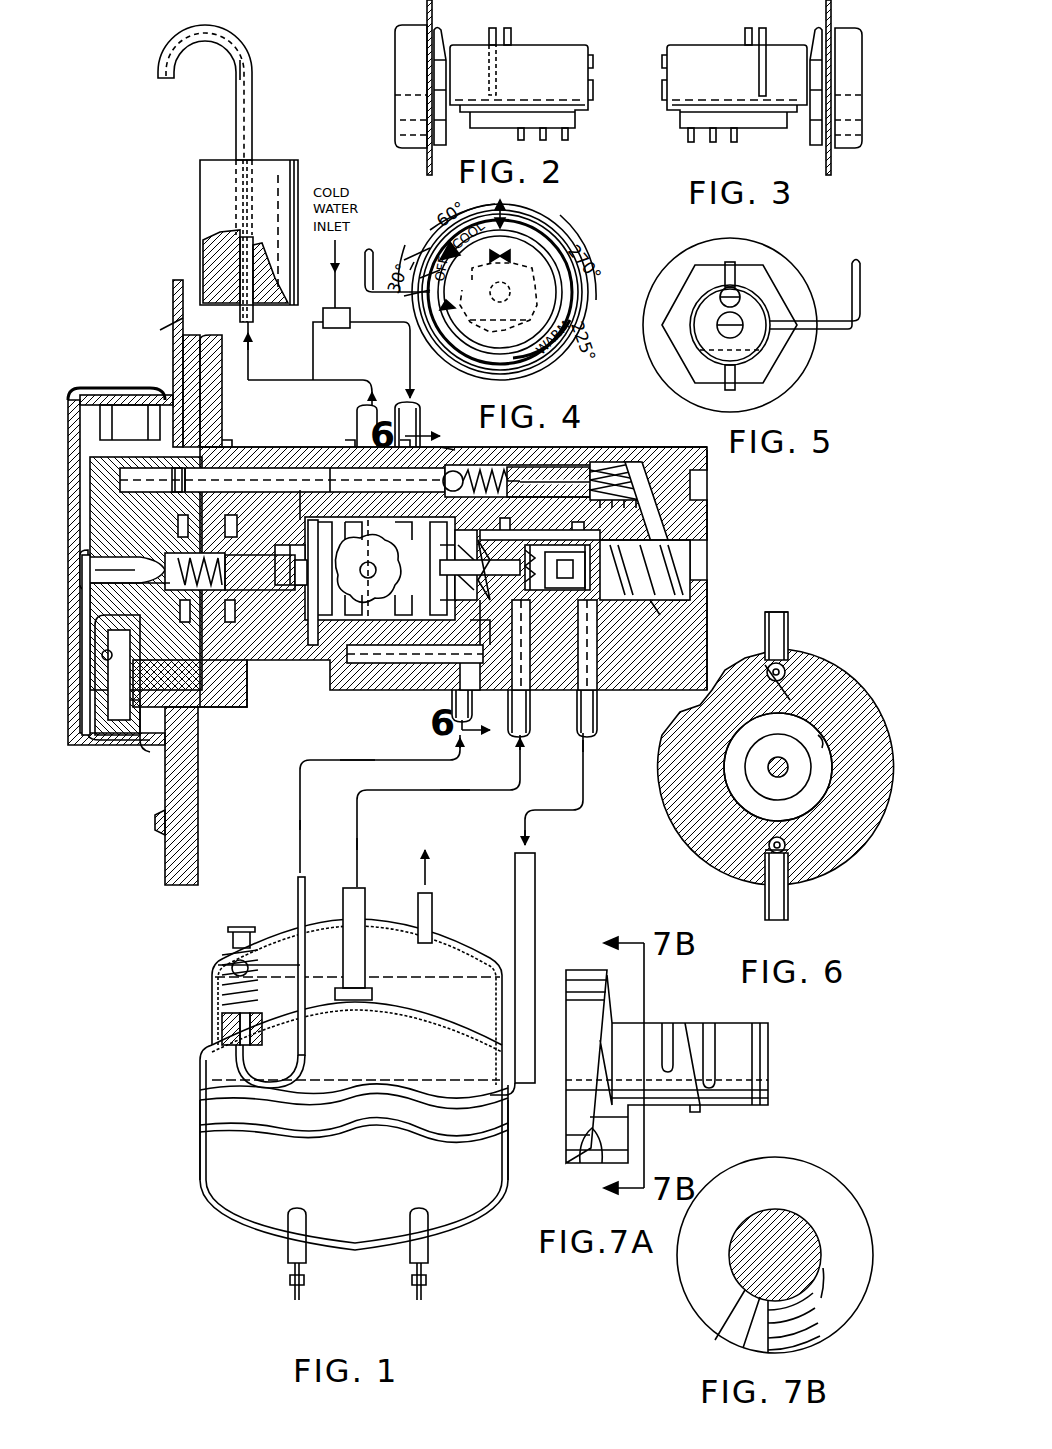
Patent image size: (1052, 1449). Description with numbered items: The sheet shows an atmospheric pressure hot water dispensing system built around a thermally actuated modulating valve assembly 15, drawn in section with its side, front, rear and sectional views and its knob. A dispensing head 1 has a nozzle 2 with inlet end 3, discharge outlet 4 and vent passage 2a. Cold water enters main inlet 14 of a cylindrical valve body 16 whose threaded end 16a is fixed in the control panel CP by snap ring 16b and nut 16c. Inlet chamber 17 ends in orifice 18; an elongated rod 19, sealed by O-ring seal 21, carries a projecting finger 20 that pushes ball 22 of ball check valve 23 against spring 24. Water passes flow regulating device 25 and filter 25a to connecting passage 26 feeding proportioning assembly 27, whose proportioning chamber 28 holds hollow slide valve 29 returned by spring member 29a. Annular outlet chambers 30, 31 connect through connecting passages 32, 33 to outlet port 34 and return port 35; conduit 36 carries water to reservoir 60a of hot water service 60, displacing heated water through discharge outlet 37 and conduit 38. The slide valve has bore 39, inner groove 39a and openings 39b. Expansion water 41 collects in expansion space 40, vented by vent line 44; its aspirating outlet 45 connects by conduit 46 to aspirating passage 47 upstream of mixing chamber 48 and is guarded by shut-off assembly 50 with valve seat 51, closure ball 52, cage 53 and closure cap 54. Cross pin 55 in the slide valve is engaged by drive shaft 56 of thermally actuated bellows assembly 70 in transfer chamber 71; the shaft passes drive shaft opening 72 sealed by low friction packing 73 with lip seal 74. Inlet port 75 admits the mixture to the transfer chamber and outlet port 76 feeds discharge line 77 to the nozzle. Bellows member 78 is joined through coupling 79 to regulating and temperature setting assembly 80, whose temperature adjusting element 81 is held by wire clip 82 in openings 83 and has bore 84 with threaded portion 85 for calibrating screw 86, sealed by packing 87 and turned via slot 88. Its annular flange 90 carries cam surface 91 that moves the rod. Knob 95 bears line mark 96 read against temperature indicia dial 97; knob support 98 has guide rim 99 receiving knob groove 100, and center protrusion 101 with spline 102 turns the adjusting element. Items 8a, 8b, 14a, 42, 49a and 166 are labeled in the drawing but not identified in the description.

In FIG. 1, the dispensing head 1 is at (218, 198).
In FIG. 1, the dispensing nozzle 2 is at (236, 100).
In FIG. 1, the vent passage 2a is at (252, 62).
In FIG. 1, the inlet end 3 is at (240, 310).
In FIG. 1, the discharge outlet 4 is at (165, 60).
In FIG. 1, the control panel CP is at (172, 292).
In FIG. 2, the tube 8a is at (511, 30).
In FIG. 5, the tube 8a is at (725, 270).
In FIG. 6, the tube 8a is at (788, 620).
In FIG. 3, the tube 8b is at (745, 30).
In FIG. 6, the main inlet 14 is at (789, 638).
In FIG. 1, the cold water inlet pipe 14a is at (423, 418).
In FIG. 1, the thermally actuated modulating valve assembly 15 is at (298, 445).
In FIG. 2, the thermally actuated modulating valve assembly 15 is at (555, 42).
In FIG. 3, the thermally actuated modulating valve assembly 15 is at (695, 44).
In FIG. 5, the thermally actuated modulating valve assembly 15 is at (772, 348).
In FIG. 1, the cylindrical valve body 16 is at (300, 447).
In FIG. 1, the threaded end 16a is at (135, 405).
In FIG. 1, the snap ring 16b is at (178, 360).
In FIG. 1, the nut 16c is at (218, 395).
In FIG. 2, the nut 16c is at (447, 45).
In FIG. 3, the nut 16c is at (812, 40).
In FIG. 1, the inlet chamber 17 is at (350, 447).
In FIG. 6, the inlet chamber 17 is at (768, 672).
In FIG. 1, the outlet orifice 18 is at (450, 450).
In FIG. 6, the outlet orifice 18 is at (786, 672).
In FIG. 1, the elongated rod 19 is at (201, 465).
In FIG. 6, the elongated rod 19 is at (778, 767).
In FIG. 1, the projecting finger 20 is at (370, 493).
In FIG. 6, the projecting finger 20 is at (778, 755).
In FIG. 1, the O-ring seal 21 is at (178, 468).
In FIG. 1, the ball 22 is at (455, 492).
In FIG. 1, the ball check valve 23 is at (492, 498).
In FIG. 1, the spring 24 is at (470, 557).
In FIG. 1, the flow regulating device 25 is at (585, 447).
In FIG. 1, the filter 25a is at (622, 462).
In FIG. 1, the connecting passage 26 is at (708, 516).
In FIG. 1, the proportioning assembly 27 is at (548, 490).
In FIG. 1, the proportioning chamber 28 is at (495, 622).
In FIG. 1, the hollow cylindrical slide valve 29 is at (650, 600).
In FIG. 1, the spring member 29a is at (660, 600).
In FIG. 1, the annular outlet chamber 30 is at (580, 518).
In FIG. 1, the annular outlet chamber 31 is at (520, 521).
In FIG. 1, the connecting passage 32 is at (597, 663).
In FIG. 1, the connecting passage 33 is at (530, 634).
In FIG. 1, the outlet port 34 is at (598, 706).
In FIG. 1, the return port 35 is at (530, 712).
In FIG. 1, the conduit 36 is at (584, 787).
In FIG. 2, the conduit 36 is at (570, 135).
In FIG. 3, the conduit 36 is at (688, 138).
In FIG. 5, the conduit 36 is at (735, 375).
In FIG. 1, the discharge outlet 37 is at (365, 906).
In FIG. 1, the connecting conduit 38 is at (428, 795).
In FIG. 2, the connecting conduit 38 is at (546, 140).
In FIG. 3, the connecting conduit 38 is at (716, 140).
In FIG. 1, the elongated bore 39 is at (558, 578).
In FIG. 1, the inner groove 39a is at (572, 574).
In FIG. 1, the spaced openings 39b is at (642, 531).
In FIG. 1, the expansion space 40 is at (452, 955).
In FIG. 1, the expansion water 41 is at (357, 992).
In FIG. 1, the lower chamber 42 is at (357, 1041).
In FIG. 1, the vent line 44 is at (252, 362).
In FIG. 1, the aspirating outlet 45 is at (258, 1034).
In FIG. 1, the conduit 46 is at (300, 812).
In FIG. 2, the conduit 46 is at (518, 135).
In FIG. 3, the conduit 46 is at (740, 138).
In FIG. 6, the conduit 46 is at (790, 900).
In FIG. 1, the aspirating passage 47 is at (468, 680).
In FIG. 6, the aspirating passage 47 is at (770, 845).
In FIG. 1, the mixing chamber 48 is at (450, 705).
In FIG. 6, the mixing chamber 48 is at (786, 847).
In FIG. 1, the tube 49a is at (297, 935).
In FIG. 1, the shut-off assembly 50 is at (218, 1030).
In FIG. 1, the valve seat 51 is at (250, 990).
In FIG. 1, the closure ball 52 is at (228, 955).
In FIG. 1, the cage 53 is at (232, 968).
In FIG. 1, the closure cap 54 is at (236, 930).
In FIG. 1, the cross pin 55 is at (540, 560).
In FIG. 1, the drive shaft 56 is at (450, 560).
In FIG. 6, the drive shaft 56 is at (788, 770).
In FIG. 1, the atmospheric pressure hot water service 60 is at (225, 1152).
In FIG. 1, the reservoir 60a is at (205, 1105).
In FIG. 1, the thermally actuated bellows assembly 70 is at (308, 600).
In FIG. 1, the transfer chamber 71 is at (282, 480).
In FIG. 6, the transfer chamber 71 is at (825, 740).
In FIG. 1, the drive shaft opening 72 is at (476, 595).
In FIG. 1, the low friction packing 73 is at (450, 588).
In FIG. 1, the lip seal 74 is at (470, 633).
In FIG. 1, the inlet port 75 is at (400, 663).
In FIG. 1, the outlet port 76 is at (370, 575).
In FIG. 1, the discharge line 77 is at (350, 385).
In FIG. 2, the discharge line 77 is at (490, 28).
In FIG. 3, the discharge line 77 is at (766, 40).
In FIG. 4, the discharge line 77 is at (390, 274).
In FIG. 5, the discharge line 77 is at (862, 268).
In FIG. 1, the bellows member 78 is at (320, 622).
In FIG. 1, the coupling 79 is at (296, 560).
In FIG. 1, the regulating and temperature setting assembly 80 is at (82, 630).
In FIG. 1, the temperature adjusting element 81 is at (105, 520).
In FIG. 4, the temperature adjusting element 81 is at (528, 300).
In FIG. 1, the wire clip 82 is at (232, 447).
In FIG. 1, the openings 83 is at (235, 690).
In FIG. 1, the bore 84 is at (178, 522).
In FIG. 1, the threaded portion 85 is at (212, 553).
In FIG. 1, the calibrating screw 86 is at (215, 590).
In FIG. 1, the packing 87 is at (258, 590).
In FIG. 1, the slot 88 is at (190, 585).
In FIG. 1, the annular flange 90 is at (92, 484).
In FIG. 1, the cam surface 91 is at (108, 660).
In FIG. 7A, the cam surface 91 is at (588, 1160).
In FIG. 7B, the cam surface 91 is at (778, 1175).
In FIG. 1, the knob 95 is at (70, 440).
In FIG. 2, the knob 95 is at (400, 62).
In FIG. 3, the knob 95 is at (850, 148).
In FIG. 4, the knob 95 is at (540, 255).
In FIG. 1, the line mark 96 is at (80, 388).
In FIG. 4, the line mark 96 is at (500, 210).
In FIG. 1, the temperature indicia dial 97 is at (100, 395).
In FIG. 1, the knob support 98 is at (165, 812).
In FIG. 2, the knob support 98 is at (432, 14).
In FIG. 3, the knob support 98 is at (832, 15).
In FIG. 4, the knob support 98 is at (588, 276).
In FIG. 5, the knob support 98 is at (770, 255).
In FIG. 1, the annular guide rim 99 is at (95, 745).
In FIG. 1, the groove 100 is at (132, 745).
In FIG. 1, the center protrusion 101 is at (88, 578).
In FIG. 4, the center protrusion 101 is at (498, 291).
In FIG. 1, the spline 102 is at (132, 568).
In FIG. 4, the spline 102 is at (511, 285).
In FIG. 5, the hex nut 166 is at (770, 290).